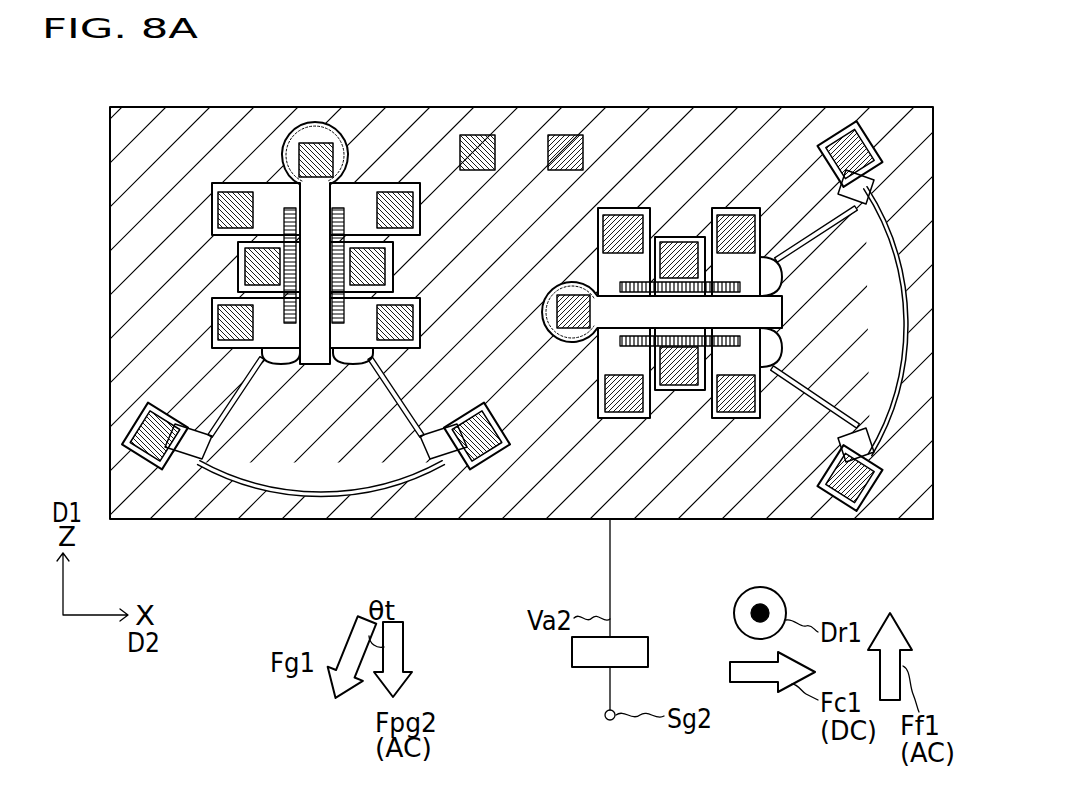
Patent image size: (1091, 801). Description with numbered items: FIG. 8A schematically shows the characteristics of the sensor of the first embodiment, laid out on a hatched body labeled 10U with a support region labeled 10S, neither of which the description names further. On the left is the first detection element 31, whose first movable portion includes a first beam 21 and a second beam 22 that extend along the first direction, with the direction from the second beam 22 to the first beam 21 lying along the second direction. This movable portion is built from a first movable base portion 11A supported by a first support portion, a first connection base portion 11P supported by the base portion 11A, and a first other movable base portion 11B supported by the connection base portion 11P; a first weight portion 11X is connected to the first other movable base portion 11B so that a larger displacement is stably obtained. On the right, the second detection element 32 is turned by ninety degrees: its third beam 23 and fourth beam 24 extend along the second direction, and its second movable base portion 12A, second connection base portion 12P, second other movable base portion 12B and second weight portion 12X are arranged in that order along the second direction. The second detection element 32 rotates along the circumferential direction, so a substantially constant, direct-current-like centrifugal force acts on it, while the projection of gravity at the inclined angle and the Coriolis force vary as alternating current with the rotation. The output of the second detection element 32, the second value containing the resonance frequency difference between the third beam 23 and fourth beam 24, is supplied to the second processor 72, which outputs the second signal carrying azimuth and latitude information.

The sensor unit 10U is at (877, 94).
The support portion 10S is at (297, 160).
The first detection element 31 is at (275, 301).
The second detection element 32 is at (716, 316).
The first movable base portion 11A is at (308, 225).
The first connection base portion 11P is at (315, 268).
The first other movable base portion 11B is at (310, 302).
The first weight portion 11X is at (283, 400).
The first beam 21 is at (344, 268).
The second beam 22 is at (352, 280).
The third beam 23 is at (677, 303).
The fourth beam 24 is at (700, 300).
The second movable base portion 12A is at (630, 317).
The second connection base portion 12P is at (683, 333).
The second other movable base portion 12B is at (707, 318).
The second weight portion 12X is at (817, 327).
The second processor 72 is at (650, 651).